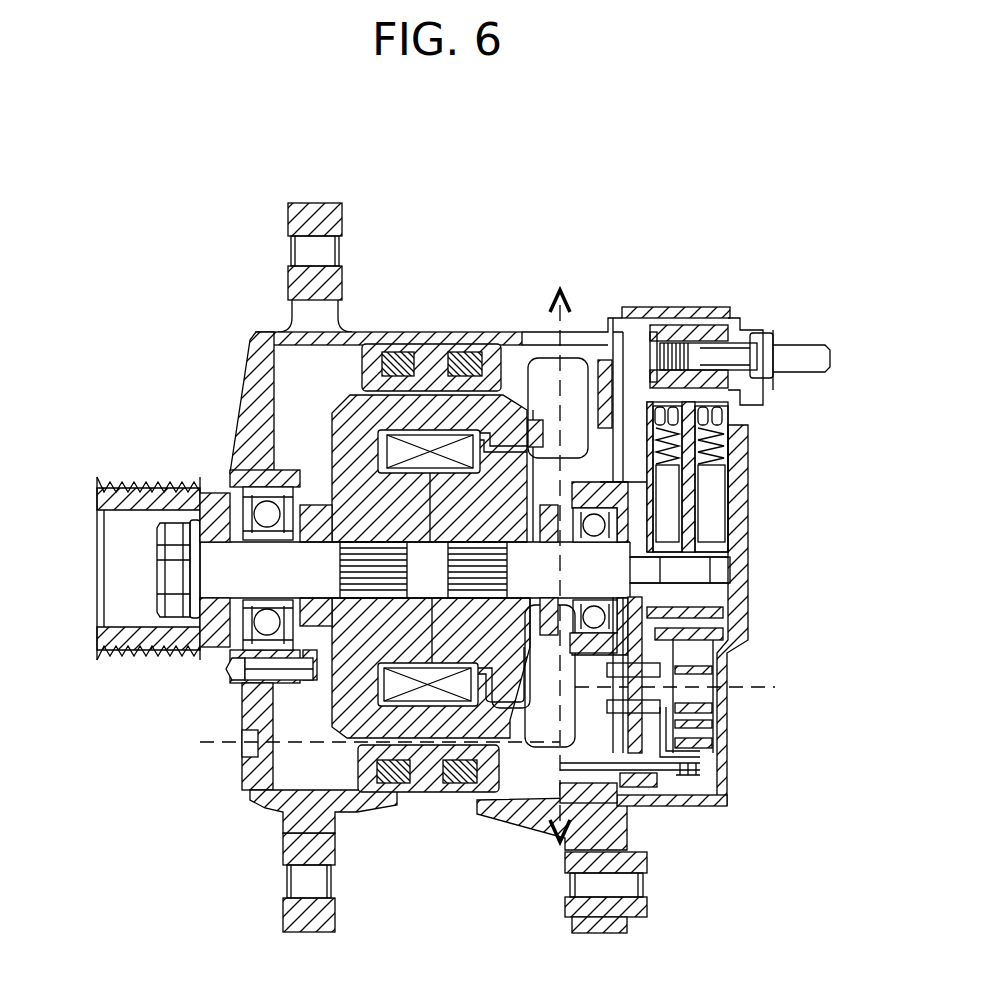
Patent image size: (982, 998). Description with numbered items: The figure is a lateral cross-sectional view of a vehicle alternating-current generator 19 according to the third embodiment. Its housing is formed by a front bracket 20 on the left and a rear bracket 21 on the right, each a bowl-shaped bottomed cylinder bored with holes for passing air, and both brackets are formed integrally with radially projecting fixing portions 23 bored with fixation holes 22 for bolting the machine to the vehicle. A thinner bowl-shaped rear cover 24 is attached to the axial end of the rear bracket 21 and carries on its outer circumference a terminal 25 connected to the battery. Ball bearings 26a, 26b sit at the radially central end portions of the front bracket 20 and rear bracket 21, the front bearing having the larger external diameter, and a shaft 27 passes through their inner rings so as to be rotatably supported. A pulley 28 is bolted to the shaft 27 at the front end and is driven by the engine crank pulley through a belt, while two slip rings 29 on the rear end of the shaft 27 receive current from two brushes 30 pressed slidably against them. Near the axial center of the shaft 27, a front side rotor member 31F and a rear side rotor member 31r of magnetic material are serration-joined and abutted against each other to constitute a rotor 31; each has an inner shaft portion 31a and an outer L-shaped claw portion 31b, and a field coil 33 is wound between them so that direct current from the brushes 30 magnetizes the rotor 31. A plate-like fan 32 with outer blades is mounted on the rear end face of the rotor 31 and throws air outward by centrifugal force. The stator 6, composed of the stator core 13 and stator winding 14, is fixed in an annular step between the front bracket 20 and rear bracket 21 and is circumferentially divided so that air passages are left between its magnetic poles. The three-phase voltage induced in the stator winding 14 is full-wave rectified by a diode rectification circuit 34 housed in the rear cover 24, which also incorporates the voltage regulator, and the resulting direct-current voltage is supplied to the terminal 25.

The vehicle alternating-current generator 19 is at (252, 300).
The stator 6 is at (433, 345).
The stator core 13 is at (396, 345).
The stator winding 14 is at (482, 345).
The front bracket 20 is at (272, 792).
The rear bracket 21 is at (568, 365).
The fixation holes 22 is at (333, 250).
The fixing portions 23 is at (288, 222).
The rear cover 24 is at (730, 715).
The terminal 25 is at (800, 345).
The ball bearing 26a is at (240, 482).
The ball bearing 26b is at (652, 635).
The shaft 27 is at (232, 575).
The pulley 28 is at (118, 640).
The slip rings 29 is at (668, 541).
The brushes 30 is at (668, 492).
The rotor 31 is at (328, 422).
The front side rotor member 31F is at (347, 465).
The rear side rotor member 31r is at (680, 655).
The shaft portions 31a is at (190, 565).
The claw portions 31b is at (383, 770).
The fan 32 is at (600, 345).
The field coil 33 is at (428, 708).
The rectification circuit 34 is at (672, 735).